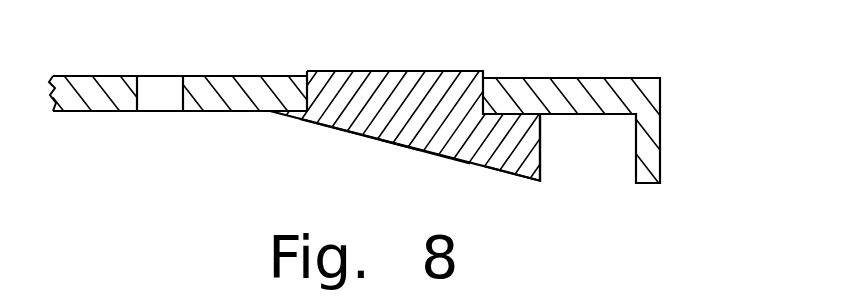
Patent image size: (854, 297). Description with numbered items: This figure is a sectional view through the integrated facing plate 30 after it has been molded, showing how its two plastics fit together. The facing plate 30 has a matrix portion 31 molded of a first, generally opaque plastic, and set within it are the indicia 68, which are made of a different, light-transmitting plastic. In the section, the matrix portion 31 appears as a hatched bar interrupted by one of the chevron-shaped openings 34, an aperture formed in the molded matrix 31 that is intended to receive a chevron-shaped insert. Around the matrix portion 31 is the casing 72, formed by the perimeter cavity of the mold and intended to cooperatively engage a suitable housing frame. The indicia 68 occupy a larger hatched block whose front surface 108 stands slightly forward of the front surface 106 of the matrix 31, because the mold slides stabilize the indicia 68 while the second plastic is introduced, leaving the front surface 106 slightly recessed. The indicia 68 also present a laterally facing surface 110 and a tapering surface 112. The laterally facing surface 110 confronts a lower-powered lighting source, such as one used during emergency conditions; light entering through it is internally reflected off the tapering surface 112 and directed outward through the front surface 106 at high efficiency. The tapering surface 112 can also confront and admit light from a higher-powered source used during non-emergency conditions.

The integrated facing plate 30 is at (604, 100).
The matrix portion 31 is at (212, 74).
The chevron-shaped openings 34 is at (160, 112).
The indicia 68 is at (362, 130).
The casing 72 is at (636, 134).
The front surface of the matrix 106 is at (585, 76).
The front surface of the indicia 108 is at (394, 69).
The laterally facing surface 110 is at (543, 142).
The tapering surface 112 is at (415, 149).